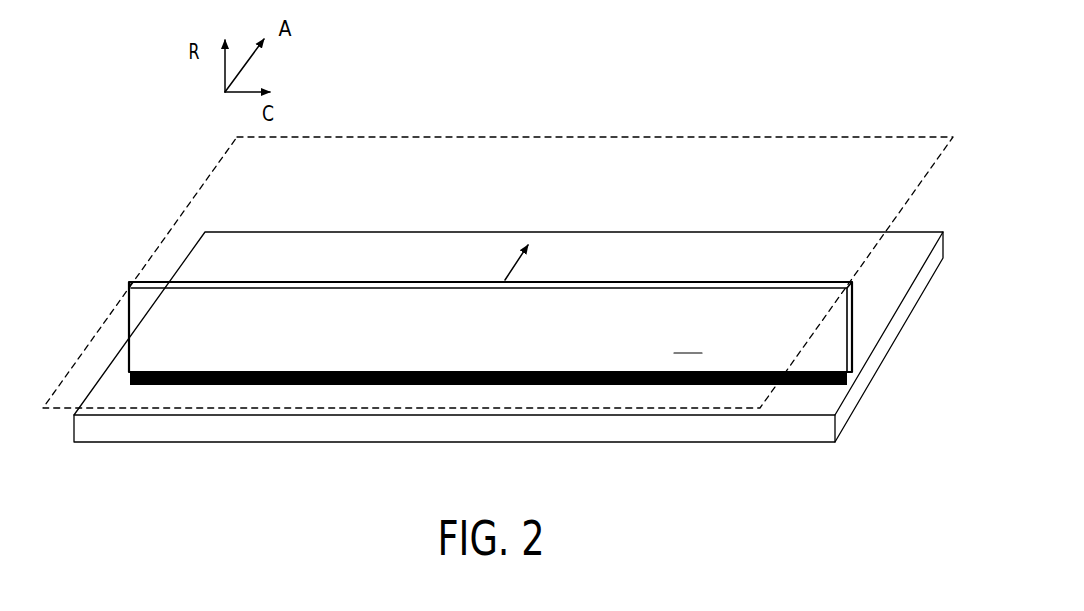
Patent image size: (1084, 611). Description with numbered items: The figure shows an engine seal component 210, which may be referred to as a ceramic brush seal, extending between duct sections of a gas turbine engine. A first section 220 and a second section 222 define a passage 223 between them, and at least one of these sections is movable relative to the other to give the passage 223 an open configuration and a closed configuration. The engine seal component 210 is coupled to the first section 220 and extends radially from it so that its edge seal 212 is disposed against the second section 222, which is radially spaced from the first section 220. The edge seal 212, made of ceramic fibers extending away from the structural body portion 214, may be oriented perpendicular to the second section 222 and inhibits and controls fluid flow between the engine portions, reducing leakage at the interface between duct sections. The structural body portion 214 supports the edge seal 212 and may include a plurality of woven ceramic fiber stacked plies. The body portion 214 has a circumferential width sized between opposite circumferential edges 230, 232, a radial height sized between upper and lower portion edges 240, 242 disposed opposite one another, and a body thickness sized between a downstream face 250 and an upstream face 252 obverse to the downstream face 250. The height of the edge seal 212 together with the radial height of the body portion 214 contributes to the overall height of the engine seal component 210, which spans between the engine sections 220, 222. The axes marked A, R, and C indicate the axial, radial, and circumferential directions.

The engine seal component 210 is at (454, 195).
The edge seal 212 is at (238, 383).
The structural body portion 214 is at (433, 320).
The first section 220 is at (627, 158).
The second section 222 is at (518, 362).
The passage 223 is at (811, 392).
The circumferential edge 230 is at (129, 333).
The circumferential edge 232 is at (850, 333).
The upper portion edge 240 is at (388, 283).
The lower portion edge 242 is at (345, 372).
The downstream face 250 is at (688, 342).
The upstream face 252 is at (735, 281).